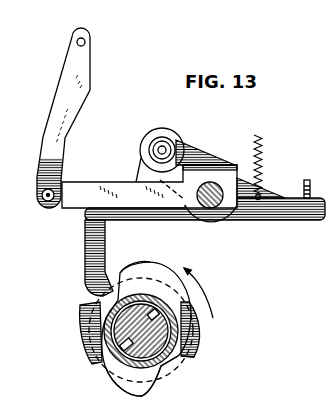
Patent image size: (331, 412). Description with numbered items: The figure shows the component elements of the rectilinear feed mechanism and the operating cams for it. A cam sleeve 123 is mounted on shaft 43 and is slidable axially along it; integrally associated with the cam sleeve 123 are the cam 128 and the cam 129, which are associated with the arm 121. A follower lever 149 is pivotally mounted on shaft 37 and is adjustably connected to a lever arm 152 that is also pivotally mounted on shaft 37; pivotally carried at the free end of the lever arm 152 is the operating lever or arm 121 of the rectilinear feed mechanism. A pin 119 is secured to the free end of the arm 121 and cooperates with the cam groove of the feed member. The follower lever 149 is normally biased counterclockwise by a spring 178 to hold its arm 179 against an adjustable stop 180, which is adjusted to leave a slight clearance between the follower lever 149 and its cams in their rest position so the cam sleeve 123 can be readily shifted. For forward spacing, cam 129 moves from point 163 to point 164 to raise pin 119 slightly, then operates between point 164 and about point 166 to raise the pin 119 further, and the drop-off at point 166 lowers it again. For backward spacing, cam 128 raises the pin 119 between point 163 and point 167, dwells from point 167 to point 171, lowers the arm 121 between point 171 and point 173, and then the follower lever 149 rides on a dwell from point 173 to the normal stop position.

The shaft 37 is at (213, 184).
The shaft 43 is at (162, 367).
The pin 119 is at (85, 37).
The arm 121 is at (85, 59).
The cam sleeve 123 is at (110, 345).
The cam 128 is at (170, 268).
The cam 129 is at (203, 336).
The follower lever 149 is at (85, 238).
The lever arm 152 is at (96, 188).
The cam point 163 is at (85, 322).
The cam point 164 is at (125, 283).
The cam point 166 is at (200, 360).
The cam point 167 is at (127, 263).
The cam point 171 is at (163, 268).
The cam point 173 is at (202, 346).
The spring 178 is at (263, 143).
The arm 179 is at (315, 214).
The adjustable stop 180 is at (308, 180).